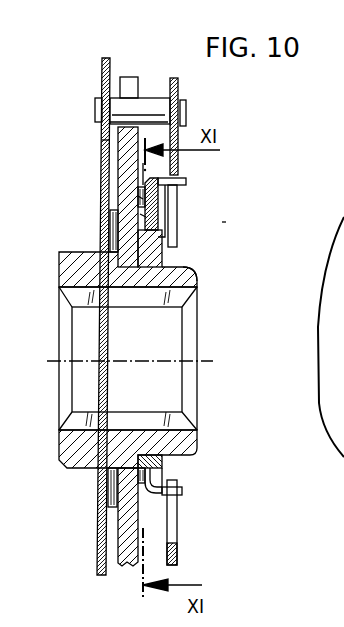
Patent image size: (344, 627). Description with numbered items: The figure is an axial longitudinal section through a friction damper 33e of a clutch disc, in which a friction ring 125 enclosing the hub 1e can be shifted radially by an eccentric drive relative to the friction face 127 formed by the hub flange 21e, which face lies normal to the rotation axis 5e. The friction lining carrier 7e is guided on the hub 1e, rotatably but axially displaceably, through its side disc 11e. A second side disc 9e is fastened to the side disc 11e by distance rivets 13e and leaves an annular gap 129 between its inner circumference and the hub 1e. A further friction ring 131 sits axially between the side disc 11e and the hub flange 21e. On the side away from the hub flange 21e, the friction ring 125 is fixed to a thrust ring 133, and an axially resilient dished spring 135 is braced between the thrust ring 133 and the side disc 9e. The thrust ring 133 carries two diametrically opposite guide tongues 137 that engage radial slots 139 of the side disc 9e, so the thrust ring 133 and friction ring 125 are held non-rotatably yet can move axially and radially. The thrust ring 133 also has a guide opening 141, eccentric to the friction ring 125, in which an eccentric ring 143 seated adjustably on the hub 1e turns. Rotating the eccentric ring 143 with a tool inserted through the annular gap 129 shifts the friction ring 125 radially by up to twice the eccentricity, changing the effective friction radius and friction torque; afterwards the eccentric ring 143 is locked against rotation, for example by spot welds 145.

The hub 1e is at (60, 266).
The rotation axis 5e is at (208, 366).
The friction lining carrier 7e is at (86, 80).
The side disc 9e is at (179, 88).
The side disc 11e is at (101, 141).
The distance rivets 13e is at (156, 99).
The hub flange 21e is at (118, 160).
The friction damper 33e is at (230, 222).
The friction ring 125 is at (141, 200).
The friction face 127 is at (160, 153).
The annular gap 129 is at (172, 250).
The friction ring 131 is at (110, 231).
The thrust ring 133 is at (145, 216).
The dished spring 135 is at (162, 474).
The guide tongues 137 is at (186, 181).
The radial slots 139 is at (177, 202).
The guide opening 141 is at (147, 236).
The eccentric ring 143 is at (193, 282).
The spot welds 145 is at (168, 262).